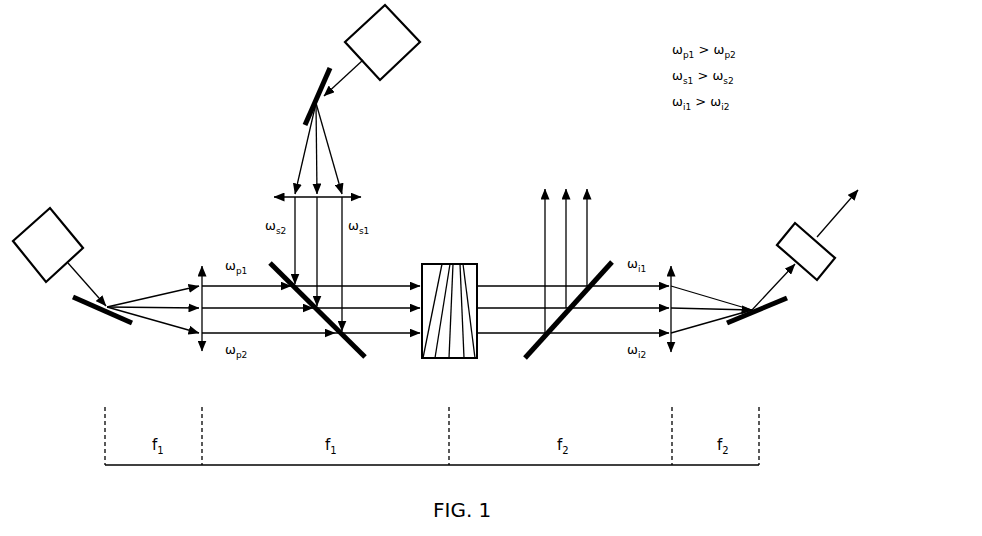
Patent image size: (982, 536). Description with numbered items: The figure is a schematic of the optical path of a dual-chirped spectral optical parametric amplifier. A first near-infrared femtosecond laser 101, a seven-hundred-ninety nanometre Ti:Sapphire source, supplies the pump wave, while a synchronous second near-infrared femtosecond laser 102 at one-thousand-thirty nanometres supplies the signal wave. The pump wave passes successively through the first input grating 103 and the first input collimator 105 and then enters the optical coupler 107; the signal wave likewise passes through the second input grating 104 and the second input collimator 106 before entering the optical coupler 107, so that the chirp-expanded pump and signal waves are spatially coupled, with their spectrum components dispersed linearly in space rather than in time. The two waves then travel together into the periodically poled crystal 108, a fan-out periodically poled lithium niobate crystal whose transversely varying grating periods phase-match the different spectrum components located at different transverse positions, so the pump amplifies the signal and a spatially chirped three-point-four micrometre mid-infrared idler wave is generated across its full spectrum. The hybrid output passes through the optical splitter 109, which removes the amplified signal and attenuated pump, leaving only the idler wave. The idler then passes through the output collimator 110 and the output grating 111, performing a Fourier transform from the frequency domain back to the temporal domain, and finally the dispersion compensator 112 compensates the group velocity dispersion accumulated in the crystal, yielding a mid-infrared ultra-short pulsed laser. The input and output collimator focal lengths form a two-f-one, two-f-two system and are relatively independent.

The first near-infrared femtosecond laser 101 is at (66, 219).
The second near-infrared femtosecond laser 102 is at (418, 43).
The first input grating 103 is at (97, 309).
The second input grating 104 is at (322, 78).
The first input collimator 105 is at (198, 350).
The second input collimator 106 is at (277, 195).
The optical coupler 107 is at (350, 353).
The periodically poled crystal 108 is at (437, 263).
The optical splitter 109 is at (523, 355).
The output collimator 110 is at (672, 267).
The output grating 111 is at (777, 310).
The dispersion compensator 112 is at (778, 245).